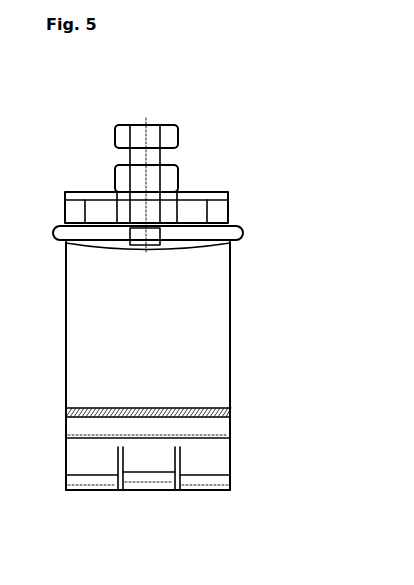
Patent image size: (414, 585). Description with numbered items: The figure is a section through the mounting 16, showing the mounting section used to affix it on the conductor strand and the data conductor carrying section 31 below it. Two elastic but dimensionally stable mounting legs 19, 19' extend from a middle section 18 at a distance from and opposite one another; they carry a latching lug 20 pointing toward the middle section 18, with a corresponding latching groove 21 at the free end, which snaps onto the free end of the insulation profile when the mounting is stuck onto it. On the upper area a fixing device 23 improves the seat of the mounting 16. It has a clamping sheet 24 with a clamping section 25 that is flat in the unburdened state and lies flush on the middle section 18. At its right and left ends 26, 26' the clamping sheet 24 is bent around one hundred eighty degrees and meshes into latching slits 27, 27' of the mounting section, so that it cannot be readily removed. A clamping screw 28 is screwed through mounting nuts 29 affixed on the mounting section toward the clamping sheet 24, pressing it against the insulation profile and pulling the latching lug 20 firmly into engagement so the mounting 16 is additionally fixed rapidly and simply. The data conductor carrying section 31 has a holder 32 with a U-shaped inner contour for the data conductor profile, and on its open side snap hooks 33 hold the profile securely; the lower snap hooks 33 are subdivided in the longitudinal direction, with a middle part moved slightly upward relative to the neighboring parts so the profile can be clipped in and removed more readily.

The mounting 16 is at (177, 80).
The middle section 18 is at (89, 192).
The mounting leg 19 is at (37, 366).
The mounting leg 19' is at (115, 366).
The latching lug 20 is at (66, 415).
The latching groove 21 is at (128, 405).
The fixing device 23 is at (126, 118).
The clamping sheet 24 is at (176, 256).
The clamping section 25 is at (118, 248).
The end of clamping sheet 26 is at (79, 212).
The end of clamping sheet 26' is at (211, 214).
The latching slit 27 is at (53, 187).
The latching slit 27' is at (237, 188).
The clamping screw 28 is at (178, 130).
The mounting nut 29 is at (170, 212).
The data conductor carrying section 31 is at (145, 492).
The holder 32 is at (92, 453).
The snap hook 33 is at (66, 480).